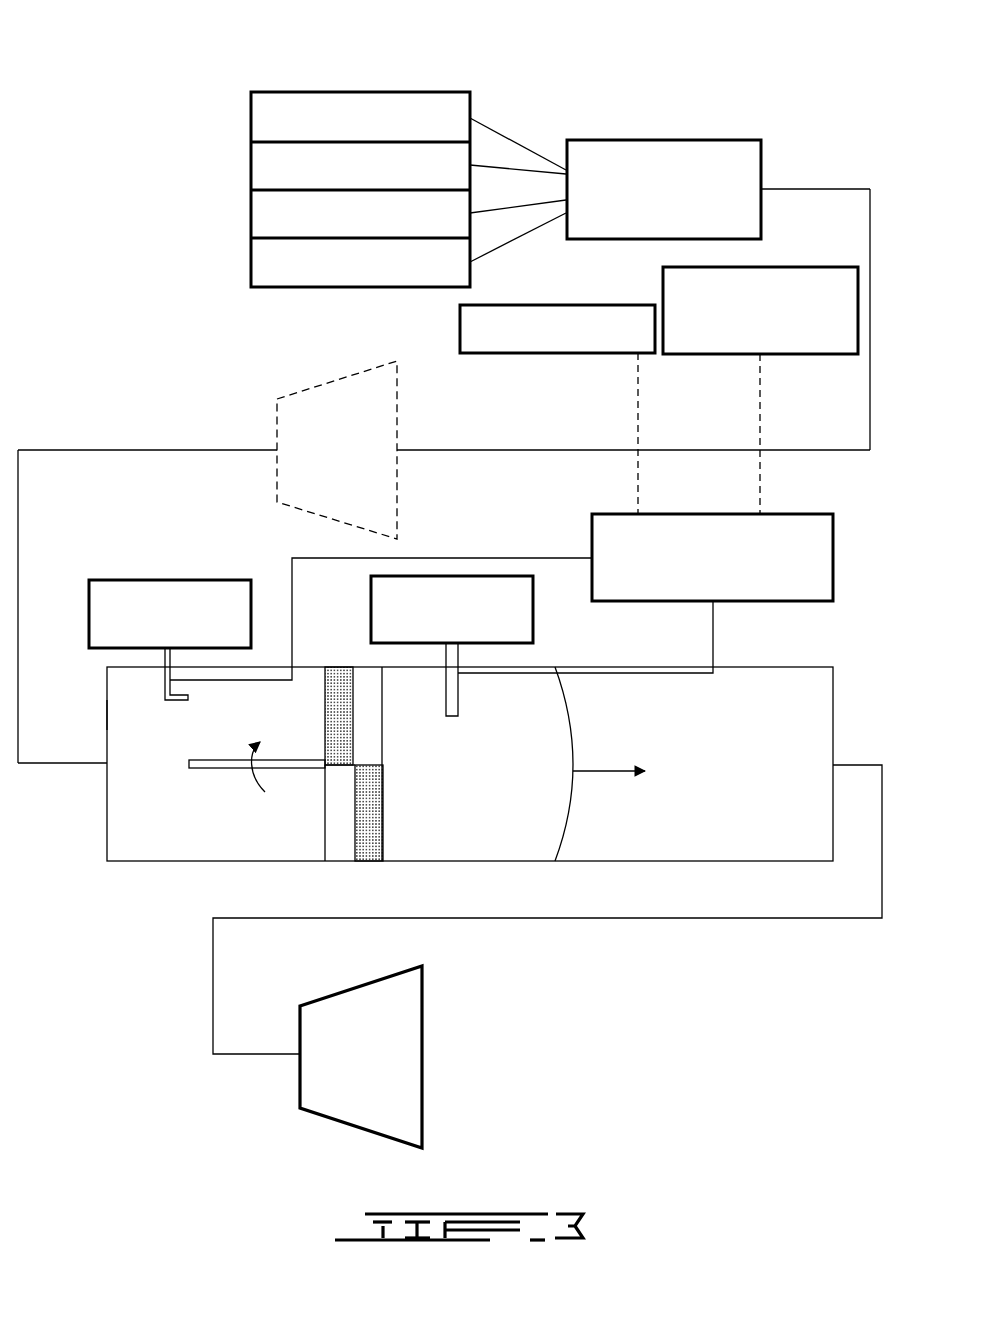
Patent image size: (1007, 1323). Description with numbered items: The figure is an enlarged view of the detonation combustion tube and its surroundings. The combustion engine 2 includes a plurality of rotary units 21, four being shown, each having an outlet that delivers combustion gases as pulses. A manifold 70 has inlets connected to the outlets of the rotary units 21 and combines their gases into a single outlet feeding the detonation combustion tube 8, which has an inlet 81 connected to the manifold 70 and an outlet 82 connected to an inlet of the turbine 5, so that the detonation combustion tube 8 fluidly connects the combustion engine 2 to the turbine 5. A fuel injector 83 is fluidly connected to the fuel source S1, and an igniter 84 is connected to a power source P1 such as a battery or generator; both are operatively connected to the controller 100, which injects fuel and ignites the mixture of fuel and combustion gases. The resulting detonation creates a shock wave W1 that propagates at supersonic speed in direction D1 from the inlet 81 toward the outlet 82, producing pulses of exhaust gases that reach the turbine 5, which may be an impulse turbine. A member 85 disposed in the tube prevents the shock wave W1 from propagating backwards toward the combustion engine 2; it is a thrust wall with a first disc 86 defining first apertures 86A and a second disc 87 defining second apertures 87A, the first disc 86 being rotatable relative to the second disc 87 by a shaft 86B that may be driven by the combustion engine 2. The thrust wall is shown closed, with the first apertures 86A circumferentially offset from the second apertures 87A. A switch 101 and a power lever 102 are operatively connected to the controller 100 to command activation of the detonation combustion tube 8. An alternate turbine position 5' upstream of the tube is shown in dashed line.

The combustion engine 2 is at (206, 162).
The rotary units 21 is at (362, 92).
The manifold 70 is at (665, 140).
The switch 101 is at (460, 328).
The power lever 102 is at (858, 313).
The turbine (alternate position) 5' is at (377, 450).
The controller 100 is at (833, 556).
The fuel source S1 is at (168, 580).
The power source P1 is at (450, 576).
The detonation combustion tube 8 is at (790, 667).
The inlet 81 is at (107, 712).
The outlet 82 is at (833, 727).
The fuel injector 83 is at (178, 700).
The igniter 84 is at (458, 690).
The member 85 is at (318, 870).
The first disc 86 is at (323, 836).
The first aperture 86A is at (339, 833).
The shaft 86B is at (205, 770).
The second disc 87 is at (383, 830).
The second aperture 87A is at (372, 737).
The shock wave W1 is at (573, 718).
The direction D1 is at (608, 773).
The turbine 5 is at (394, 1057).